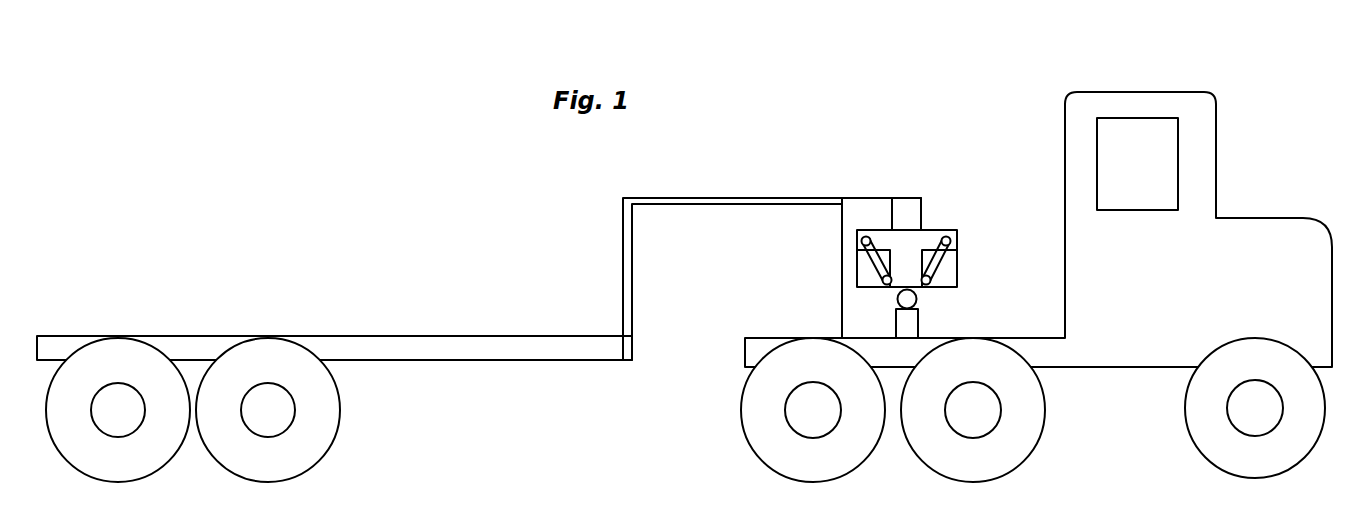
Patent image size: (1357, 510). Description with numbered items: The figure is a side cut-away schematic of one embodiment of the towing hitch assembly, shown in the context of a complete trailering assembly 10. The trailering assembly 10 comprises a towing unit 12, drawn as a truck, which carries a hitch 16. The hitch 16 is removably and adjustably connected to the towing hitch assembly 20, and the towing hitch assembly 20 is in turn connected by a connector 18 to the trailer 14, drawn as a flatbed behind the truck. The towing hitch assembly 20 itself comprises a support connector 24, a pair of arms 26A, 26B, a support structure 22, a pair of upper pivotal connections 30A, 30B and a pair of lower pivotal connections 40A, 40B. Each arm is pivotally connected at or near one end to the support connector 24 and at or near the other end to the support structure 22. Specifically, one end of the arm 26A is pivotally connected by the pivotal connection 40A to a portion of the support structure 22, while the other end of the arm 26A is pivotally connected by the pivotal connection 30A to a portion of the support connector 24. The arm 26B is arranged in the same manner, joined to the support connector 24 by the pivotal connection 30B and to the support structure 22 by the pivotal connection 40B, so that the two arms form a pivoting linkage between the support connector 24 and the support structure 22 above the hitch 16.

The trailering assembly 10 is at (1053, 21).
The towing unit 12 is at (1180, 92).
The trailer 14 is at (438, 336).
The hitch 16 is at (912, 300).
The connector 18 is at (907, 215).
The towing hitch assembly 20 is at (958, 165).
The support structure 22 is at (957, 272).
The support connector 24 is at (905, 255).
The arm 26A is at (875, 258).
The arm 26B is at (940, 257).
The pivotal connection 30A is at (860, 238).
The pivotal connection 30B is at (950, 236).
The pivotal connection 40A is at (882, 283).
The pivotal connection 40B is at (930, 283).